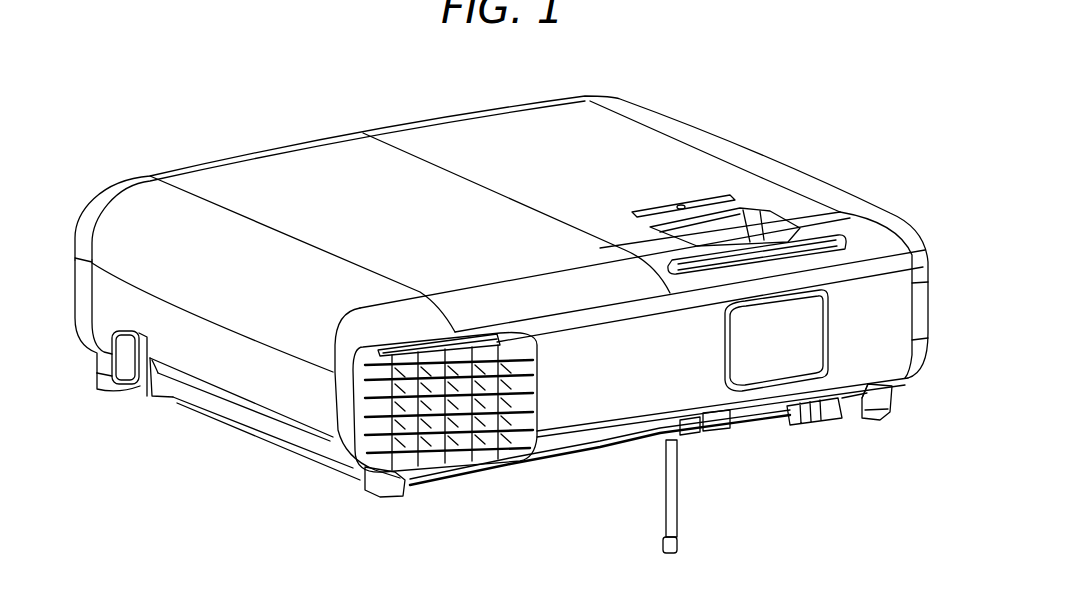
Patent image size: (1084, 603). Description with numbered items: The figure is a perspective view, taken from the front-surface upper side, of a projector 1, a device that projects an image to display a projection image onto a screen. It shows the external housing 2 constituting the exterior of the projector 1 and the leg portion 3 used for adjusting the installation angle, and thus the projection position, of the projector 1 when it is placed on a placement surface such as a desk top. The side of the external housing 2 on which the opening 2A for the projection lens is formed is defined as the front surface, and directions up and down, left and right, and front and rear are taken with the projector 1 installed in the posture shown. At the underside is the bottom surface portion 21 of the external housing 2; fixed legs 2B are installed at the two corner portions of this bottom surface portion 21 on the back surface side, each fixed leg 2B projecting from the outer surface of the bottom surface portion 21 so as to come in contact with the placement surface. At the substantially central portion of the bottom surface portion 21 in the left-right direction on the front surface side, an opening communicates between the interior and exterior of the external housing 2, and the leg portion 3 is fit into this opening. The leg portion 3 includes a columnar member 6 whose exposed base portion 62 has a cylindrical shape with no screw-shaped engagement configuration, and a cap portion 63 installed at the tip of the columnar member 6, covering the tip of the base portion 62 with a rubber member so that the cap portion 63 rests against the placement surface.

The projector 1 is at (808, 137).
The external housing 2 is at (270, 394).
The opening 2A is at (740, 357).
The fixed leg 2B is at (108, 392).
The bottom surface portion 21 is at (533, 472).
The columnar member 6 is at (661, 513).
The leg portion 3 is at (709, 483).
The base portion 62 is at (678, 488).
The cap portion 63 is at (678, 545).